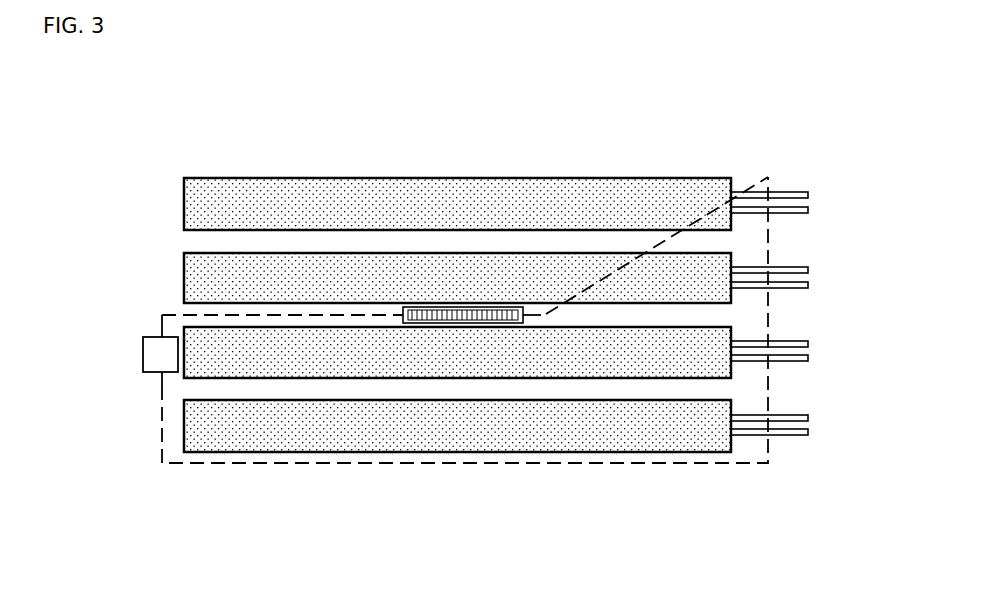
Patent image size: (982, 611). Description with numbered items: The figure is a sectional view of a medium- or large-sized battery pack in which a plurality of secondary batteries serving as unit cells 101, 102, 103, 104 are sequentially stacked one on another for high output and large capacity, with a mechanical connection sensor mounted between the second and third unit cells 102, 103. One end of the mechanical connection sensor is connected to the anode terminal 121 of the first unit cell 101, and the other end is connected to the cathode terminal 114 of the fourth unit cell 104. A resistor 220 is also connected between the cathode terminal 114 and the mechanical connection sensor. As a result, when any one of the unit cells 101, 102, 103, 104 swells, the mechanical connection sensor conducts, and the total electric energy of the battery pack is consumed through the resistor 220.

The first unit cell 101 is at (293, 178).
The second unit cell 102 is at (185, 262).
The third unit cell 103 is at (185, 377).
The fourth unit cell 104 is at (443, 452).
The anode terminal 121 is at (790, 192).
The cathode terminal 114 is at (800, 435).
The resistor 220 is at (143, 338).